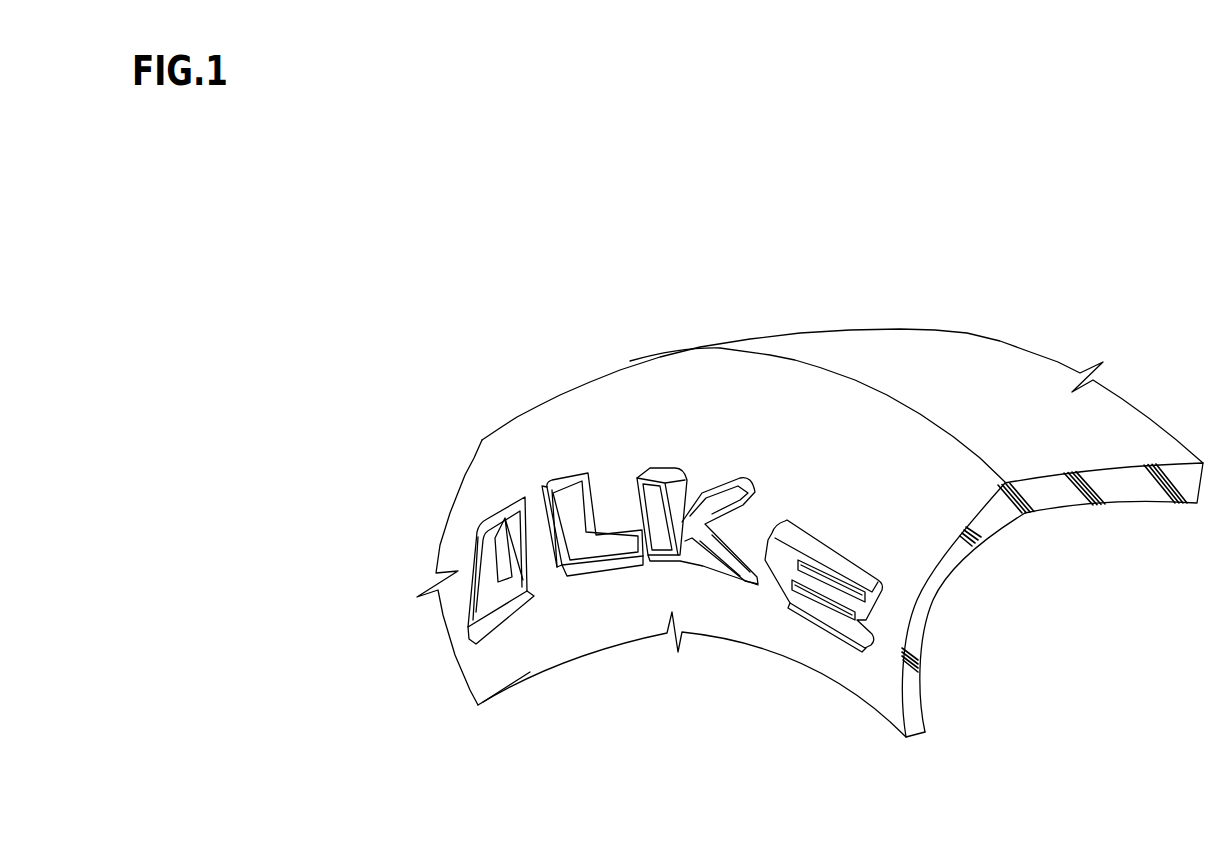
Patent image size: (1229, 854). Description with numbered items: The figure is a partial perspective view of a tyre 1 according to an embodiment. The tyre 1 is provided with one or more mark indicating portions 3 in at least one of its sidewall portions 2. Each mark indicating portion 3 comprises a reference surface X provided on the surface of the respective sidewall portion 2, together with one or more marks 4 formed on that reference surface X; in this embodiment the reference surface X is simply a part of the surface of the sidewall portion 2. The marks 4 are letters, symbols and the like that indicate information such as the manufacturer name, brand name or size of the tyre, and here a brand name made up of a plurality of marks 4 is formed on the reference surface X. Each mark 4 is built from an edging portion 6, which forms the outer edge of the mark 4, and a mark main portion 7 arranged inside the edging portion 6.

The tyre 1 is at (1078, 310).
The sidewall portion 2 is at (867, 673).
The mark indicating portion 3 is at (843, 530).
The mark 4 is at (467, 520).
The edging portion 6 is at (553, 482).
The mark main portion 7 is at (568, 537).
The reference surface X is at (752, 537).